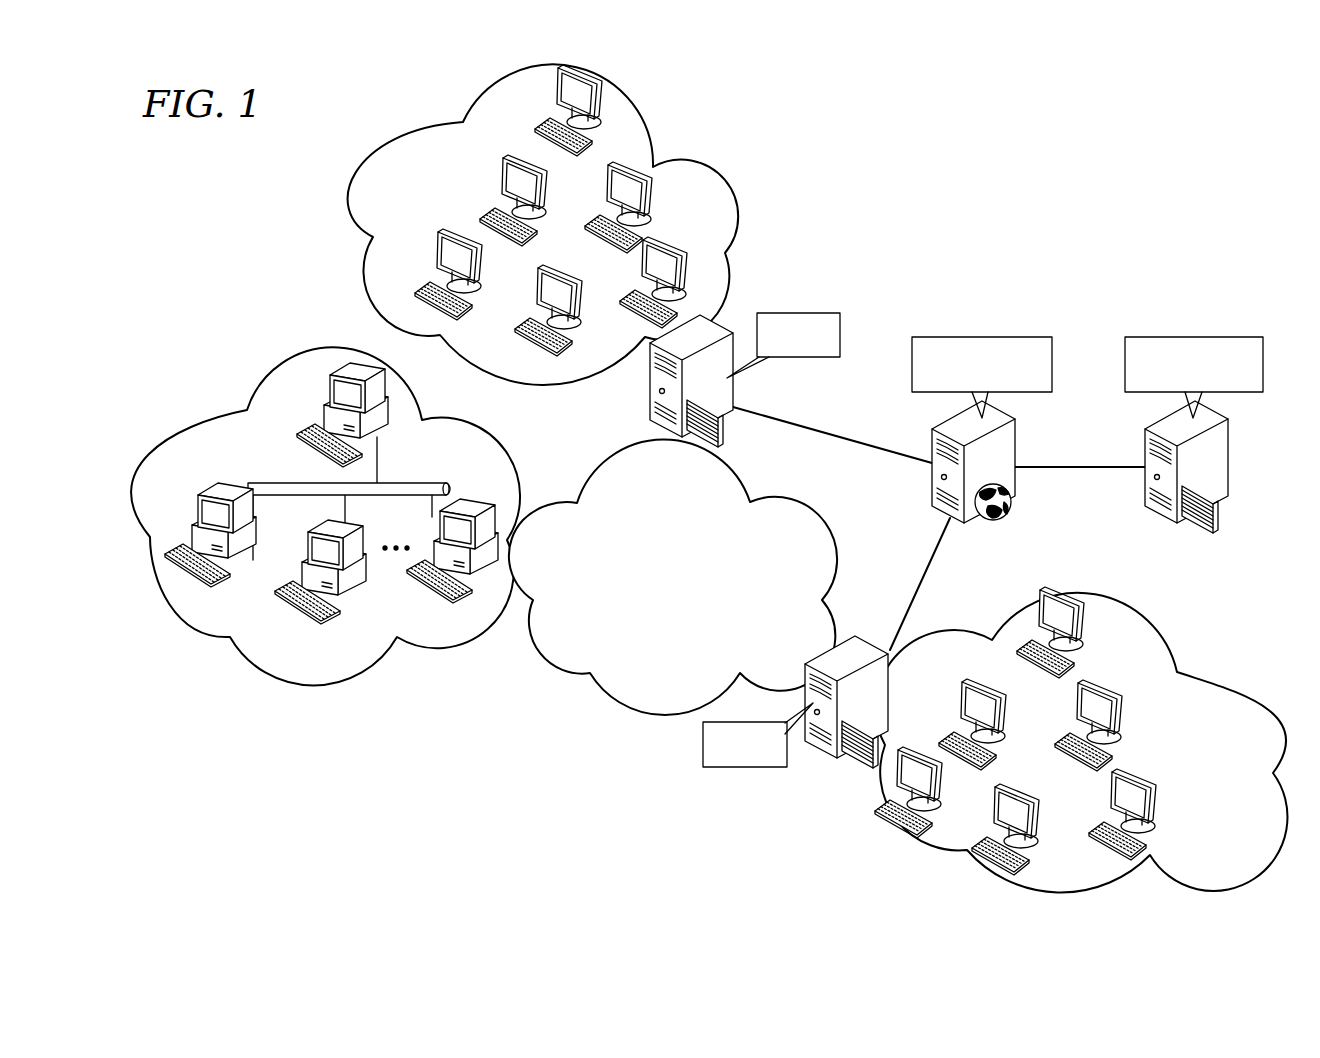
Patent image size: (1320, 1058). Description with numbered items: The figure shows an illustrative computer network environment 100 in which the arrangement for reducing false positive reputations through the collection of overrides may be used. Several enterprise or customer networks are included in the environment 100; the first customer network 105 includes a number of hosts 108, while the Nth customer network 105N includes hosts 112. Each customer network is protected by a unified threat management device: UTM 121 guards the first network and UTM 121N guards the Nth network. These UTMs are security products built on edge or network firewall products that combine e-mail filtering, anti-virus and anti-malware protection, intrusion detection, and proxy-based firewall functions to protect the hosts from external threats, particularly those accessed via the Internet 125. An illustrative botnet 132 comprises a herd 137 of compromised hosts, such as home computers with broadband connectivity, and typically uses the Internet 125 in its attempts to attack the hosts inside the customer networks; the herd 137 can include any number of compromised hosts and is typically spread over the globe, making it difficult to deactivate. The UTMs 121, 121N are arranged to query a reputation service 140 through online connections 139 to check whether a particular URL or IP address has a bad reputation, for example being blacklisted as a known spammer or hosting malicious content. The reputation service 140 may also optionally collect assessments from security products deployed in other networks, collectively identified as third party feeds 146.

The computer network environment 100 is at (905, 260).
The customer network 105 is at (543, 224).
The customer network 105N is at (1081, 739).
The hosts 108 is at (526, 111).
The hosts 112 is at (1061, 786).
The UTM 121 is at (650, 388).
The UTM 121N is at (805, 697).
The Internet 125 is at (572, 502).
The botnet 132 is at (325, 516).
The herd 137 is at (308, 663).
The online connections 139 is at (835, 440).
The reputation service 140 is at (1017, 437).
The third party feeds 146 is at (1230, 437).